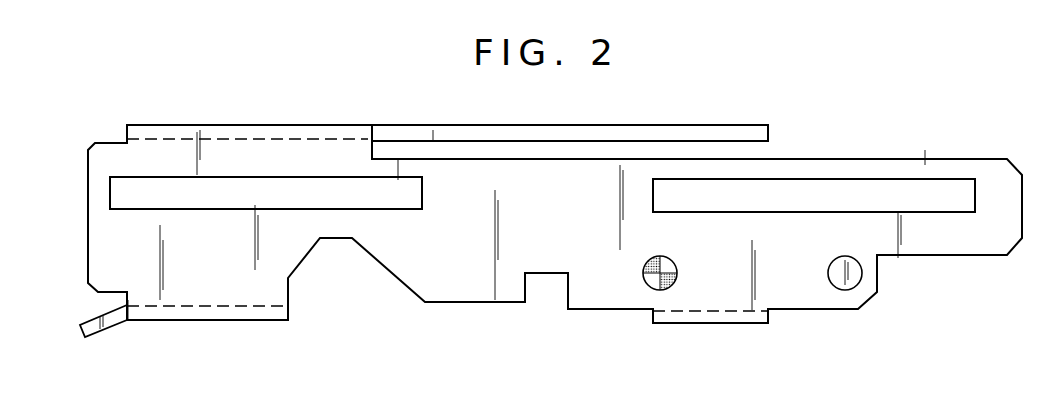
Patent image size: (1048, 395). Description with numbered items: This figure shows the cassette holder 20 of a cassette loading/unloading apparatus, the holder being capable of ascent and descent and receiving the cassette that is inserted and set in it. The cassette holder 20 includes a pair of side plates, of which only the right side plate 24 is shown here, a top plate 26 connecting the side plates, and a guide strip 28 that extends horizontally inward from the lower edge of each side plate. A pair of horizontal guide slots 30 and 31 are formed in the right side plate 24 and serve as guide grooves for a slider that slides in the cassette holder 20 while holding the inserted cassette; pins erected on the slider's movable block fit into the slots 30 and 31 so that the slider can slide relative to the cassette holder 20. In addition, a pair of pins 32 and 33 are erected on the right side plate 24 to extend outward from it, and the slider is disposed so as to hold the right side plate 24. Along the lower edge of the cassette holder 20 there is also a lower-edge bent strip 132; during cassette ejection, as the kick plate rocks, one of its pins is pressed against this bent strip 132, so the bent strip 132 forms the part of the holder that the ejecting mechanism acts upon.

The cassette holder 20 is at (477, 290).
The right side plate 24 is at (95, 247).
The top plate 26 is at (601, 128).
The guide strip 28 is at (190, 312).
The horizontal guide slot 30 is at (197, 199).
The horizontal guide slot 31 is at (795, 200).
The pin 32 is at (667, 270).
The pin 33 is at (843, 263).
The lower-edge bent strip 132 is at (712, 318).